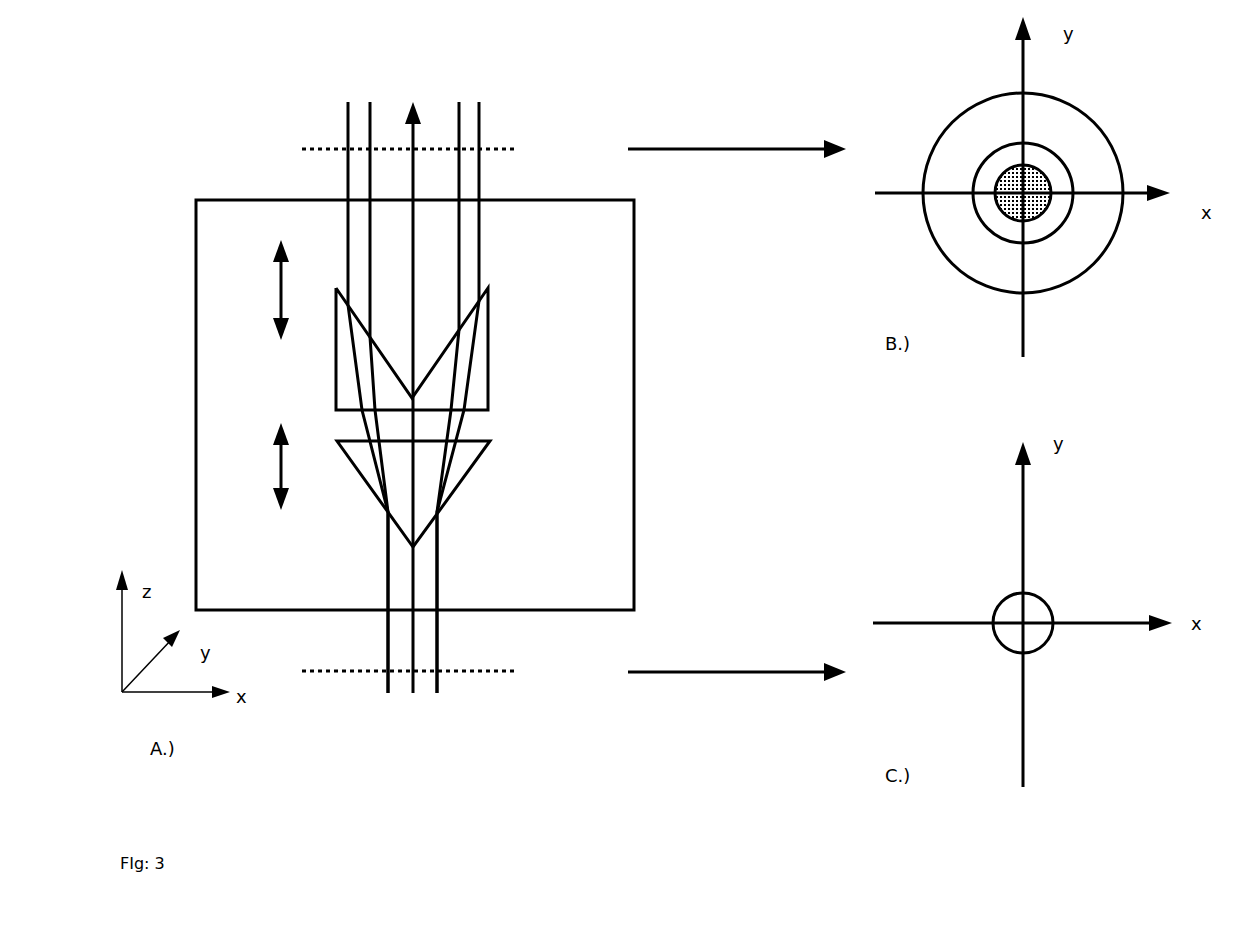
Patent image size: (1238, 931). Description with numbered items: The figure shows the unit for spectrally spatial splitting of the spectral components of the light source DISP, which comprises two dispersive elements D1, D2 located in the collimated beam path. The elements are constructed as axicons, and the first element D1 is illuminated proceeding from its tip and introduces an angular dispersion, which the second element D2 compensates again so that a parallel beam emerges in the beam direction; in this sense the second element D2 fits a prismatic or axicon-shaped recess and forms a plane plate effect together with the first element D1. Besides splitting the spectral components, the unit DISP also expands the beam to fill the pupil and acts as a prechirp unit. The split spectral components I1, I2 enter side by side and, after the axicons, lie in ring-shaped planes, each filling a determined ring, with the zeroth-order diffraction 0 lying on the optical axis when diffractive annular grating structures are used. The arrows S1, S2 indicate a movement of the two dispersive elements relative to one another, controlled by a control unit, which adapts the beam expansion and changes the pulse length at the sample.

The first spectral component I1 is at (727, 407).
The second spectral component I2 is at (718, 381).
The first dispersive element D1 is at (441, 494).
The second dispersive element D2 is at (441, 349).
The first displacement arrow S1 is at (265, 466).
The second displacement arrow S2 is at (265, 290).
The unit for spectrally spatial splitting DISP is at (415, 422).
The zeroth-order diffraction 0 is at (982, 206).